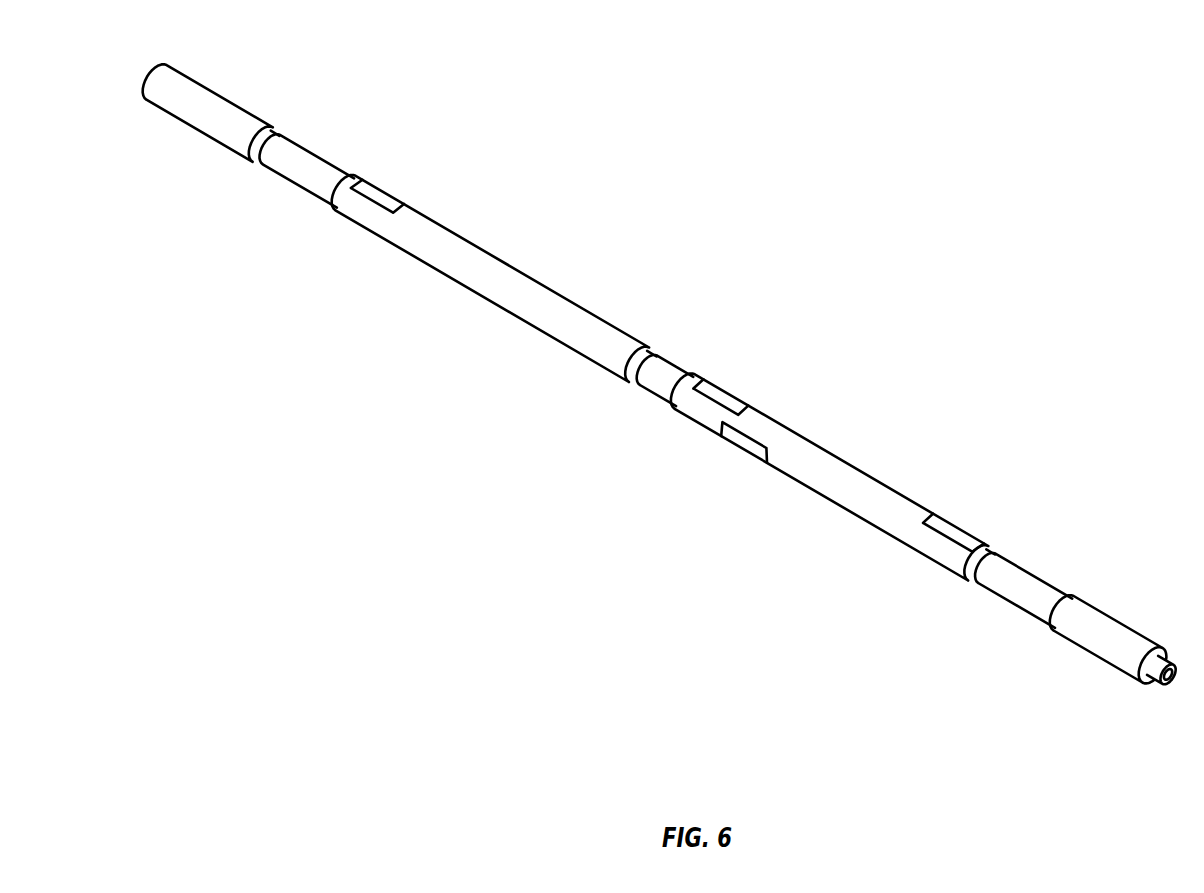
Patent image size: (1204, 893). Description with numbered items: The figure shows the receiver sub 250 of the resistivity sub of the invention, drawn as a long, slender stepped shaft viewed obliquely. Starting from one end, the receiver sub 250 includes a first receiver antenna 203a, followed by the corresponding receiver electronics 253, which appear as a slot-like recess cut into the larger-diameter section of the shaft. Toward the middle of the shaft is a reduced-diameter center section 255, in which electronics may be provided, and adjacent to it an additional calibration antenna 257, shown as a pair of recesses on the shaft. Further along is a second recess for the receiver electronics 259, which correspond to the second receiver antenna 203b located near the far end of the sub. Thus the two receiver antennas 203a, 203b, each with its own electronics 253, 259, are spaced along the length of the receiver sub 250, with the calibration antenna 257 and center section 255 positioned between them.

The receiver sub 250 is at (1019, 85).
The first receiver antenna 203a is at (307, 160).
The receiver electronics 253 is at (383, 198).
The center section 255 is at (665, 372).
The calibration antenna 257 is at (723, 400).
The receiver electronics 259 is at (963, 533).
The second receiver antenna 203b is at (1025, 578).